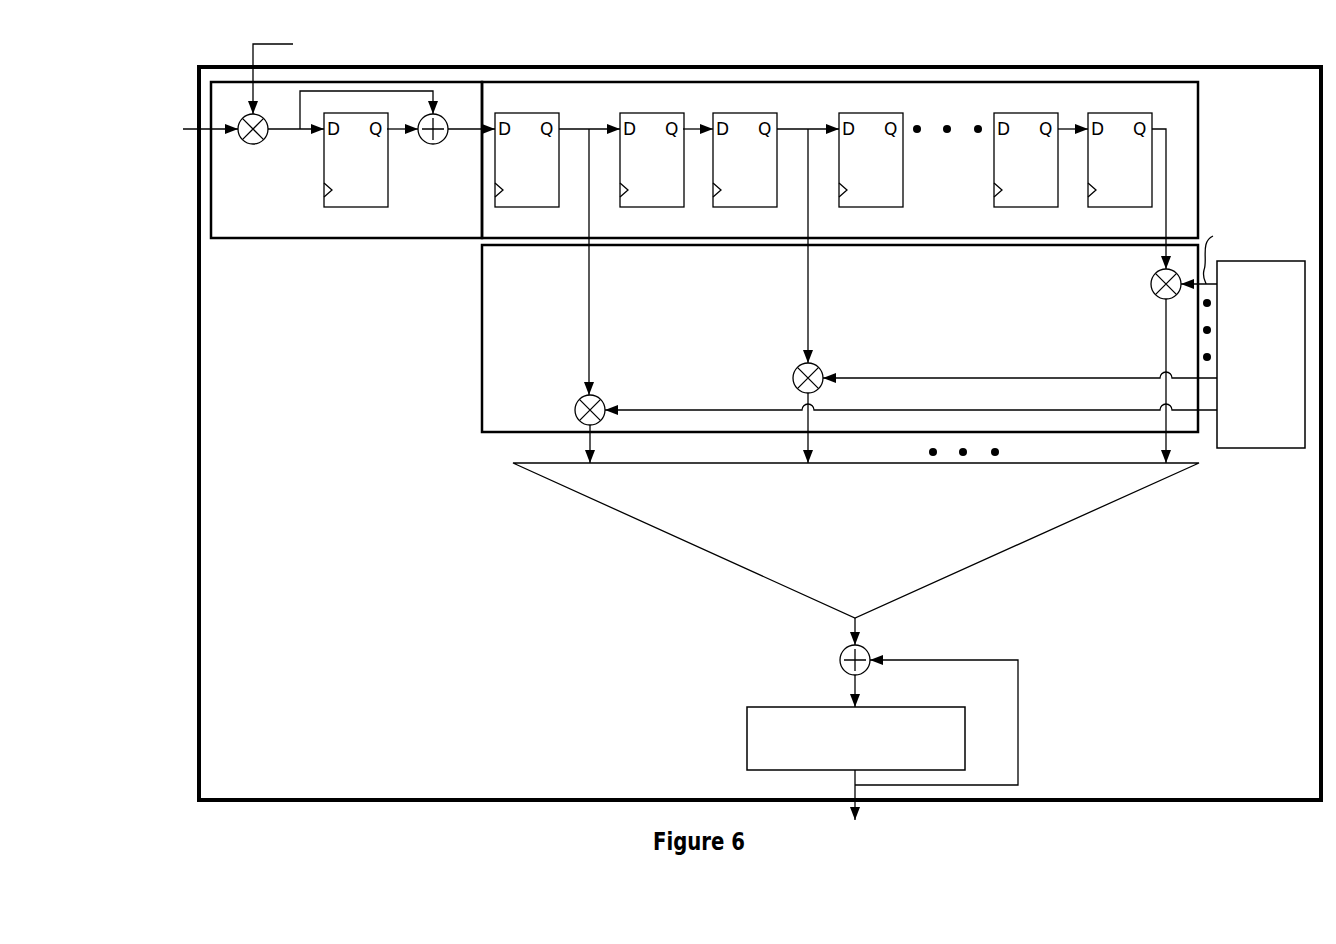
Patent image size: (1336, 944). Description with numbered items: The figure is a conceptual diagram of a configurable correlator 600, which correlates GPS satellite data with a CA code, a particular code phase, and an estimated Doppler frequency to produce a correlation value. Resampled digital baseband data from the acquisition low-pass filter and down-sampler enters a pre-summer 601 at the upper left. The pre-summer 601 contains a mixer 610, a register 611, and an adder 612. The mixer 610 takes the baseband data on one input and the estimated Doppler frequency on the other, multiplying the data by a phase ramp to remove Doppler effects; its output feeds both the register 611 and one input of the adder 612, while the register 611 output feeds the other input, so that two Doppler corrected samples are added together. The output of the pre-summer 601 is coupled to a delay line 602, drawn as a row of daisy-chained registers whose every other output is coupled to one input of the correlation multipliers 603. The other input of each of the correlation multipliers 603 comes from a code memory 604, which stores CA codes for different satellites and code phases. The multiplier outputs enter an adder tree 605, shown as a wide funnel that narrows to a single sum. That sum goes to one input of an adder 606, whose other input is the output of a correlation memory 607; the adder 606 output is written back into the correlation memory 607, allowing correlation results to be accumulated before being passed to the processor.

The configurable correlator 600 is at (728, 443).
The pre-summer 601 is at (277, 292).
The delay line 602 is at (435, 323).
The correlation multipliers 603 is at (425, 457).
The code memory 604 is at (955, 354).
The adder tree 605 is at (856, 554).
The adder 606 is at (906, 715).
The correlation memory 607 is at (856, 738).
The mixer 610 is at (251, 144).
The register 611 is at (356, 174).
The adder 612 is at (433, 148).